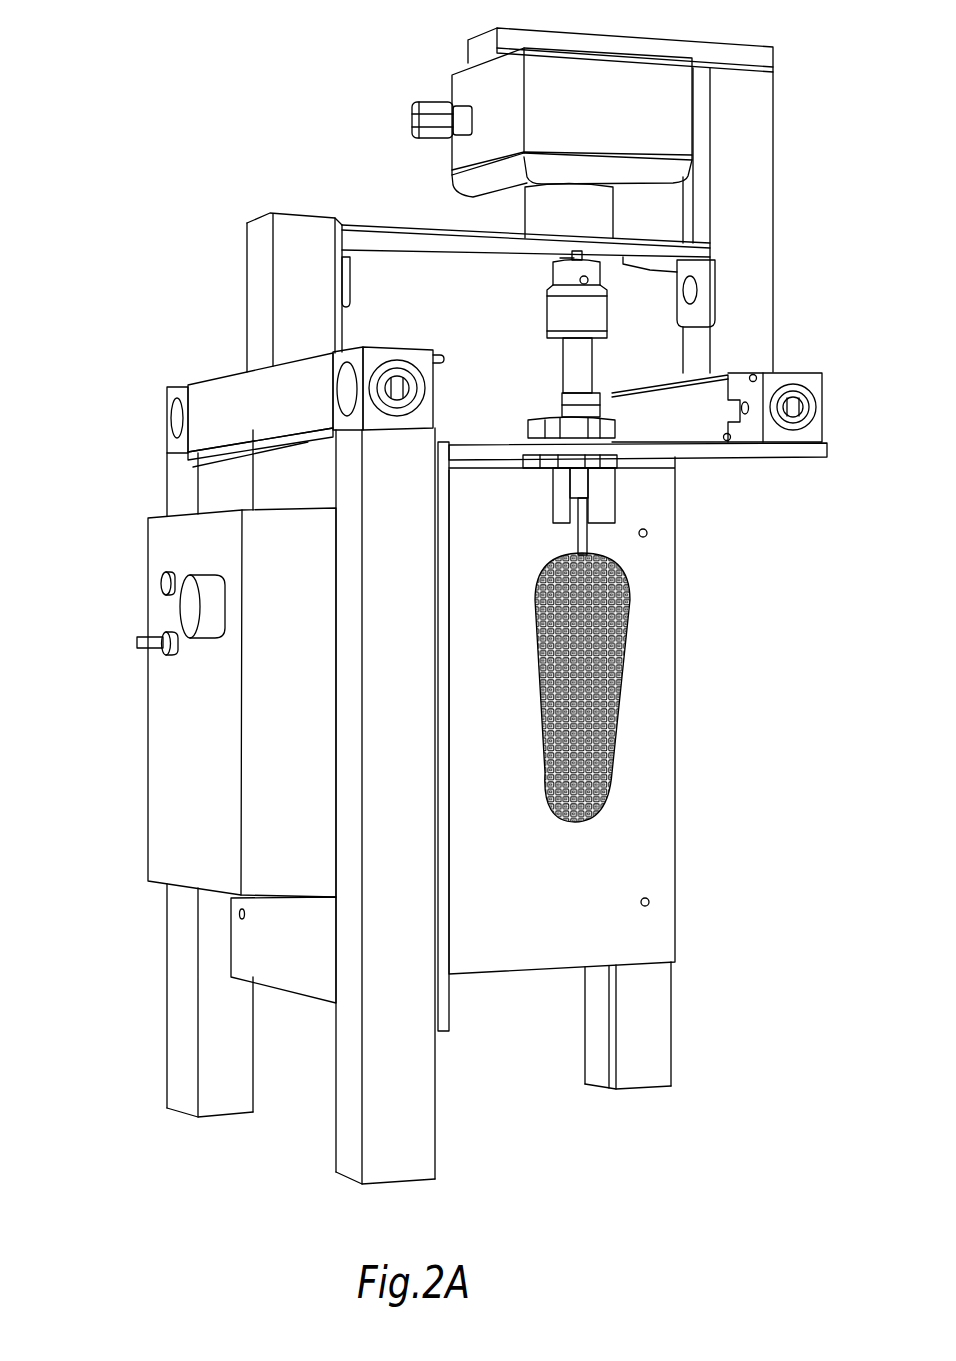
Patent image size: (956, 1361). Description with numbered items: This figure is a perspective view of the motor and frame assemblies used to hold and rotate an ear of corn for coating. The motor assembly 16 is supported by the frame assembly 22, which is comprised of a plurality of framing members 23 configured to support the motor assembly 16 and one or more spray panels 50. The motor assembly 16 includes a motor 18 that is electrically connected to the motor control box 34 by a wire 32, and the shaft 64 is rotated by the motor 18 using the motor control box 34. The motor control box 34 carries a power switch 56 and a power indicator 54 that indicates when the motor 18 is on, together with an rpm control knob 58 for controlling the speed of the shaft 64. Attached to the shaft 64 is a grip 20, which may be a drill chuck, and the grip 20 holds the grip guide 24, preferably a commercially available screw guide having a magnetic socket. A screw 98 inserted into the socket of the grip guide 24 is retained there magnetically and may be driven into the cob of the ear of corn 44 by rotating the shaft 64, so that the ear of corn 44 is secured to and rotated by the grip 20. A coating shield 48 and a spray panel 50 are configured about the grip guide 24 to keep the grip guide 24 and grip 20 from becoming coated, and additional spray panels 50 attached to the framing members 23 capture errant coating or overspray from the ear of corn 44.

The motor assembly 16 is at (464, 72).
The motor 18 is at (653, 105).
The grip 20 is at (592, 310).
The frame assembly 22 is at (243, 241).
The framing members 23 is at (768, 249).
The grip guide 24 is at (583, 365).
The wire 32 is at (428, 106).
The motor control box 34 is at (142, 762).
The ear of corn 44 is at (540, 707).
The coating shield 48 is at (610, 492).
The spray panel 50 is at (693, 460).
The power indicator 54 is at (160, 582).
The power switch 56 is at (137, 642).
The rpm control knob 58 is at (186, 615).
The shaft 64 is at (555, 260).
The screw 98 is at (578, 537).